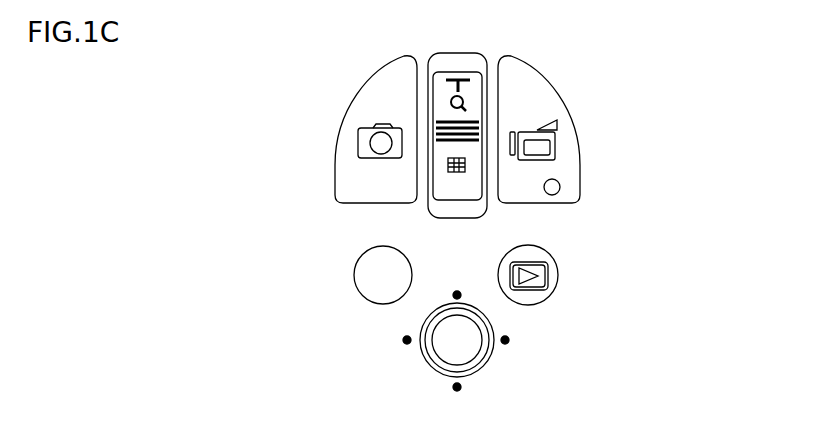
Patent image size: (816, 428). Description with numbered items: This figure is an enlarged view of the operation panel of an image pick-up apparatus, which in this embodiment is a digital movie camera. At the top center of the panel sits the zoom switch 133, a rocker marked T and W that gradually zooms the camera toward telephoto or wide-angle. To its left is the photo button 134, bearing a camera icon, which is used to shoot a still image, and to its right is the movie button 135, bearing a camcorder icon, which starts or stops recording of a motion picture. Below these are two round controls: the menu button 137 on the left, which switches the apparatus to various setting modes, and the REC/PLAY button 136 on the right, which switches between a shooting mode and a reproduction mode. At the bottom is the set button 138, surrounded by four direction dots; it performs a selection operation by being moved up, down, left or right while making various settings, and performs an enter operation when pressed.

The zoom switch 133 is at (455, 72).
The photo button 134 is at (362, 85).
The movie button 135 is at (548, 85).
The REC/PLAY button 136 is at (558, 272).
The menu button 137 is at (352, 276).
The set button 138 is at (485, 362).